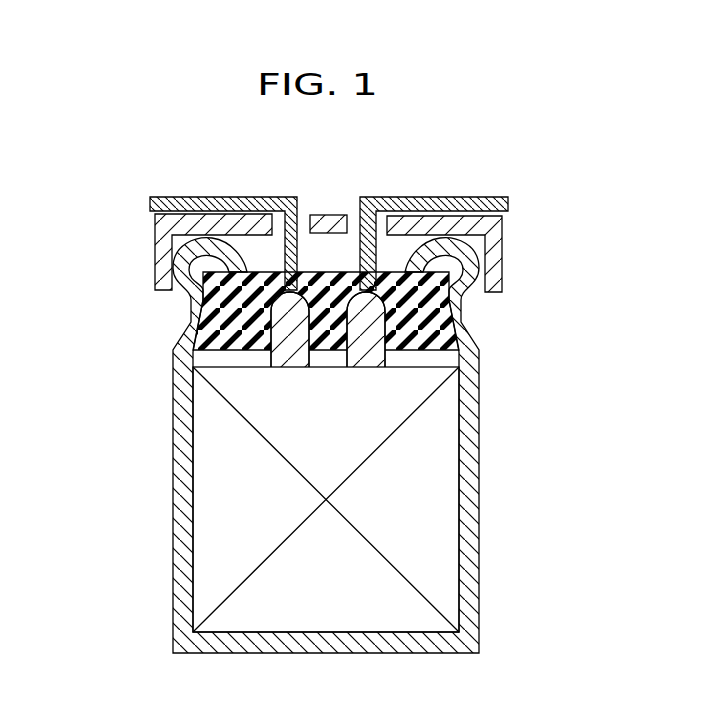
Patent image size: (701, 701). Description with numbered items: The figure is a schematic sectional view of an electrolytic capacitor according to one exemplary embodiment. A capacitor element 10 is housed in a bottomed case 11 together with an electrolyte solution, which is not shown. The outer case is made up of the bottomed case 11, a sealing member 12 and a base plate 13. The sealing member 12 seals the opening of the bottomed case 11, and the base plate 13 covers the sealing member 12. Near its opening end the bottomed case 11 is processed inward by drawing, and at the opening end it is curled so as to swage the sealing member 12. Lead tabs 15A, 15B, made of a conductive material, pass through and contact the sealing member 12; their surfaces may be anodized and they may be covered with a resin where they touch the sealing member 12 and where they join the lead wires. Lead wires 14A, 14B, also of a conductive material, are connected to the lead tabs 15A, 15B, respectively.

The capacitor element 10 is at (230, 479).
The bottomed case 11 is at (472, 450).
The sealing member 12 is at (418, 317).
The base plate 13 is at (162, 238).
The lead wire 14A is at (222, 197).
The lead wire 14B is at (442, 197).
The lead tab 15A is at (288, 318).
The lead tab 15B is at (362, 342).